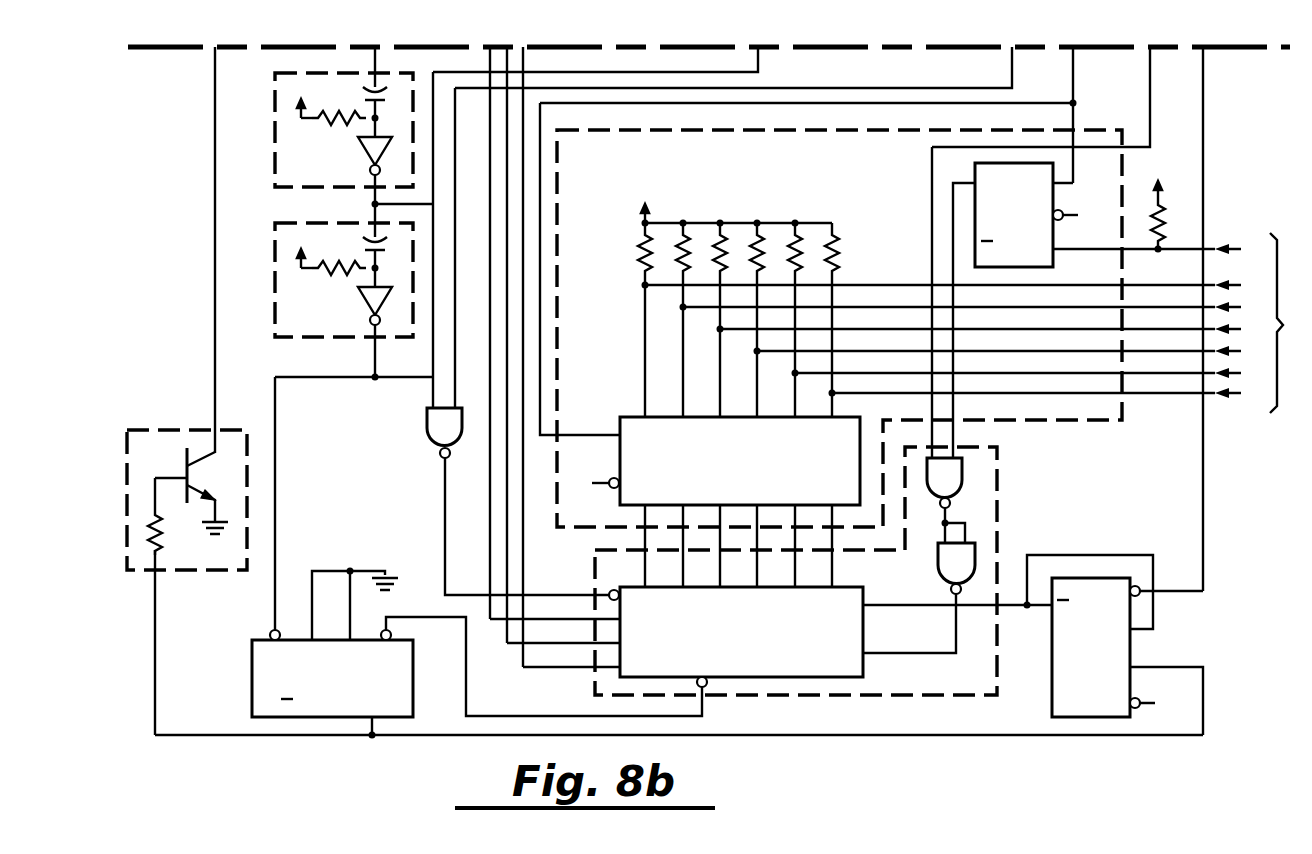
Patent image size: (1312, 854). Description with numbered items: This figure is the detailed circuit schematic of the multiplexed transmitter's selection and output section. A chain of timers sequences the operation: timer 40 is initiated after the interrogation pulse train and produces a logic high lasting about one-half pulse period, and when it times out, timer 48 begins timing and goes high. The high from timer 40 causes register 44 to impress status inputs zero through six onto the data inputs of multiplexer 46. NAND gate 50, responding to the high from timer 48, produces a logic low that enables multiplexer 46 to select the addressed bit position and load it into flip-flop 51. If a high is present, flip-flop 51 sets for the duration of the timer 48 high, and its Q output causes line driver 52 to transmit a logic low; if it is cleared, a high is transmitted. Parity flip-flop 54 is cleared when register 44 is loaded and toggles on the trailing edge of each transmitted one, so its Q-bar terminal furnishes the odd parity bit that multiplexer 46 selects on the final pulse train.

The timer 40 is at (275, 118).
The timer 48 is at (275, 268).
The NAND gate 50 is at (427, 428).
The line driver 52 is at (182, 430).
The flip-flop 51 is at (252, 667).
The register 44 is at (1083, 420).
The multiplexer 46 is at (997, 507).
The parity flip-flop 54 is at (1088, 717).